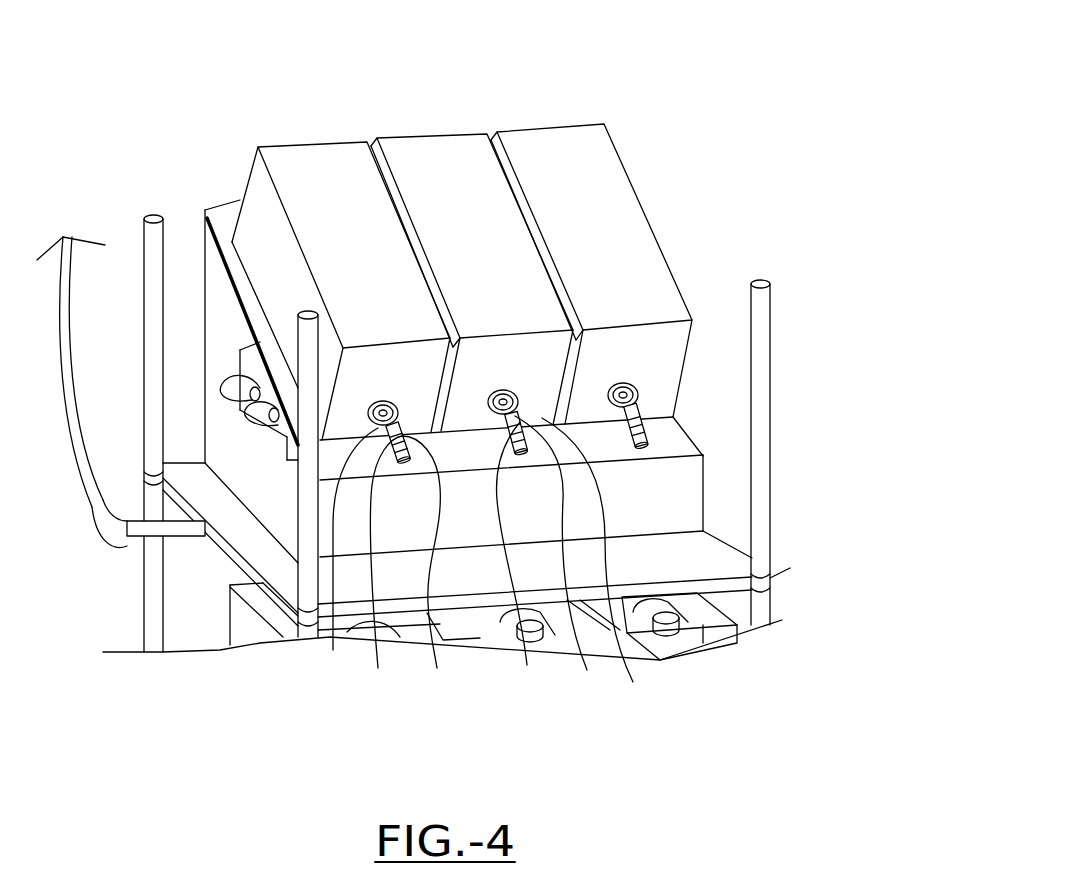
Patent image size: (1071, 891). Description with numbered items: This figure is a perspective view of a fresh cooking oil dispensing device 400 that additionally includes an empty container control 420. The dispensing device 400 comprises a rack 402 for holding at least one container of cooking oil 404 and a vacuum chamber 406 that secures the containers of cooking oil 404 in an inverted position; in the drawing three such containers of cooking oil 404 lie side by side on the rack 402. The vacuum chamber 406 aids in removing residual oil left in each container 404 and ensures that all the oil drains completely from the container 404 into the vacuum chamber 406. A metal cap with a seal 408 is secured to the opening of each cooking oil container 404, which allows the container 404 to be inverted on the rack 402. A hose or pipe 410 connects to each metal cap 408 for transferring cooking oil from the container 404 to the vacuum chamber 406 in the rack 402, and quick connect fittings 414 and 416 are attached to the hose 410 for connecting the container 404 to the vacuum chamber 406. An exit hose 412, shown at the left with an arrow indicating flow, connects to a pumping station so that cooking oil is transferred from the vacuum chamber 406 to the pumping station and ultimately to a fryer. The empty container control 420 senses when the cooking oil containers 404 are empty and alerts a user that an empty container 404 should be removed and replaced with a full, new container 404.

The dispensing device 400 is at (687, 66).
The rack 402 is at (693, 478).
The container of cooking oil 404 is at (344, 153).
The vacuum chamber 406 is at (240, 375).
The metal cap with a seal 408 is at (390, 398).
The hose or pipe 410 is at (782, 356).
The exit hose 412 is at (112, 527).
The quick connect fitting 414 is at (790, 440).
The quick connect fitting 416 is at (792, 403).
The empty container control 420 is at (222, 393).